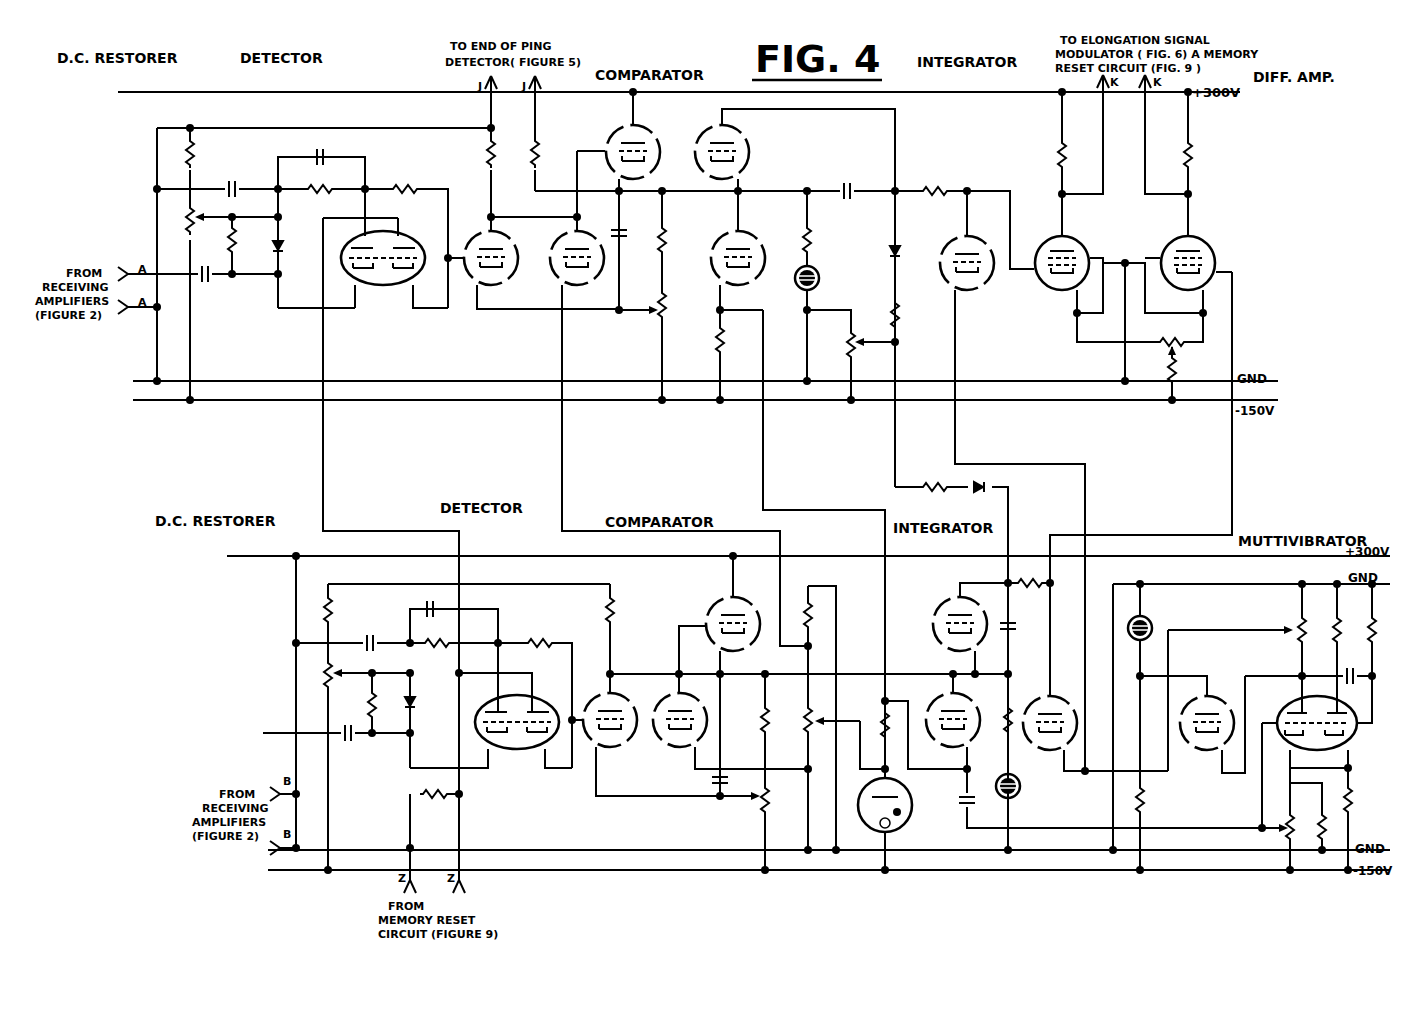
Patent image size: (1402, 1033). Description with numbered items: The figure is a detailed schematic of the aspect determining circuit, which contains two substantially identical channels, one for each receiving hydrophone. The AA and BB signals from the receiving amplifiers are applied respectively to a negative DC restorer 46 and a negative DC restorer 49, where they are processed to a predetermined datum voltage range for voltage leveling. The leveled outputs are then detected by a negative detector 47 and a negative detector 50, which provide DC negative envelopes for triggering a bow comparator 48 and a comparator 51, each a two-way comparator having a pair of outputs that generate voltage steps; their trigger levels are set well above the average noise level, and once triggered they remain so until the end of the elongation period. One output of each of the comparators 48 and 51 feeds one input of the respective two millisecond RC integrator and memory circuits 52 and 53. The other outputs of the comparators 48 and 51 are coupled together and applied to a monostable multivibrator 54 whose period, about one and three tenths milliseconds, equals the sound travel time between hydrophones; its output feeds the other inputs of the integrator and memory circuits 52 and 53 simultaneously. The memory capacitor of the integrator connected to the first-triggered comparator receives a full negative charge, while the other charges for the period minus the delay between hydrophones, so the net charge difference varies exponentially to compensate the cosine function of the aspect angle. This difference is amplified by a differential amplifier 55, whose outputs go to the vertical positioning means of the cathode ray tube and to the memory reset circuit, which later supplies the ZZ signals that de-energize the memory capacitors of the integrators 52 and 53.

The negative DC restorer 46 is at (218, 124).
The negative detector 47 is at (355, 122).
The bow comparator 48 is at (552, 131).
The negative DC restorer 49 is at (311, 553).
The negative detector 50 is at (481, 553).
The comparator 51 is at (645, 607).
The RC integrator and memory circuit 52 is at (903, 129).
The RC integrator and memory circuit 53 is at (1075, 705).
The monostable multivibrator 54 is at (1384, 697).
The differential amplifier 55 is at (1253, 156).